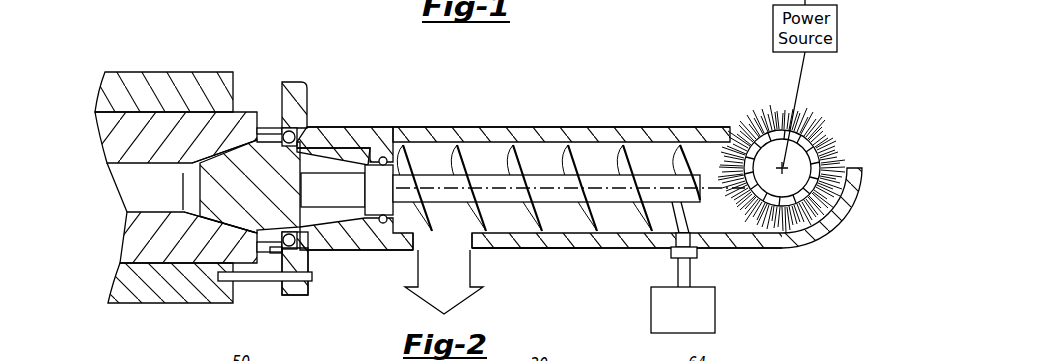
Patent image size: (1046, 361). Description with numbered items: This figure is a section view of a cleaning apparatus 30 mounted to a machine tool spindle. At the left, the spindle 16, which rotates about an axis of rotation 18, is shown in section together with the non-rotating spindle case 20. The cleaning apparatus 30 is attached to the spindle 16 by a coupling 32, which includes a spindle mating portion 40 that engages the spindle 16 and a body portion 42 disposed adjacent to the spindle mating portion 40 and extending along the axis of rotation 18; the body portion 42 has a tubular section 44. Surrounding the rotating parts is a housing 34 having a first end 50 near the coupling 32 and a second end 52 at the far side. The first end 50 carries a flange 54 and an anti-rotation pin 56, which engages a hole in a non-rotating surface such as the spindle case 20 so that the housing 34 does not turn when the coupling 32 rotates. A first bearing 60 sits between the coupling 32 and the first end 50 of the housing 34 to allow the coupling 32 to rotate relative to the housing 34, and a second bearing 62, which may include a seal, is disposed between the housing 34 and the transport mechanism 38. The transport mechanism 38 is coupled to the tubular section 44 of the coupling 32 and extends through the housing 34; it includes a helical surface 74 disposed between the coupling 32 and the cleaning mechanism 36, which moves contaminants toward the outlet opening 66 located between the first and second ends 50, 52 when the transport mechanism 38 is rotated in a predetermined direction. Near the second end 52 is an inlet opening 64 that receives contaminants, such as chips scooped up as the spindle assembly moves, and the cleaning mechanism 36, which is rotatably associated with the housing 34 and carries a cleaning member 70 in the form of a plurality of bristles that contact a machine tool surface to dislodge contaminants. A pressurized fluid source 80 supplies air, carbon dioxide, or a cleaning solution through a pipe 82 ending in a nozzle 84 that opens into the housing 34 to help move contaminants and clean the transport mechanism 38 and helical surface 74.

The spindle 16 is at (168, 296).
The spindle case 20 is at (217, 305).
The spindle mating portion 40 is at (224, 160).
The coupling 32 is at (268, 128).
The first end 50 is at (275, 84).
The first bearing 60 is at (297, 132).
The flange 54 is at (312, 290).
The anti-rotation pin 56 is at (250, 283).
The body portion 42 is at (270, 255).
The tubular section 44 is at (346, 157).
The inlet opening 64 is at (728, 126).
The housing 34 is at (570, 255).
The helical surface 74 is at (536, 265).
The cleaning apparatus 30 is at (588, 128).
The second bearing 62 is at (380, 166).
The axis of rotation 18 is at (569, 188).
The transport mechanism 38 is at (456, 200).
The outlet opening 66 is at (444, 273).
The nozzle 84 is at (686, 212).
The pipe 82 is at (691, 272).
The pressurized fluid source 80 is at (651, 315).
The cleaning mechanism 36 is at (849, 142).
The cleaning member 70 is at (770, 125).
The second end 52 is at (840, 244).